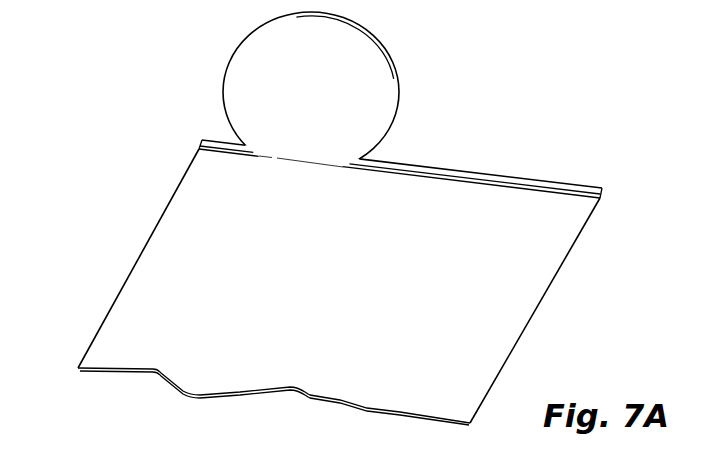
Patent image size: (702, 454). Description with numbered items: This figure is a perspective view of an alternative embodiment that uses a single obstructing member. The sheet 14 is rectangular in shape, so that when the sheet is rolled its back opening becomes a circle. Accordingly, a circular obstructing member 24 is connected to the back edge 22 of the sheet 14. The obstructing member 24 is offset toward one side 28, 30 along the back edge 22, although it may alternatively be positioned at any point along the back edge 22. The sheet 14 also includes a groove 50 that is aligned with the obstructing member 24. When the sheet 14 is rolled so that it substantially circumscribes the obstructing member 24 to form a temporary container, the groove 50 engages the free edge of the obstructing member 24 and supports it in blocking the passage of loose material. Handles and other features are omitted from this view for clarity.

The sheet 14 is at (323, 272).
The back edge 22 is at (477, 160).
The obstructing member 24 is at (248, 108).
The side 28 is at (92, 288).
The side 30 is at (540, 330).
The groove 50 is at (425, 176).